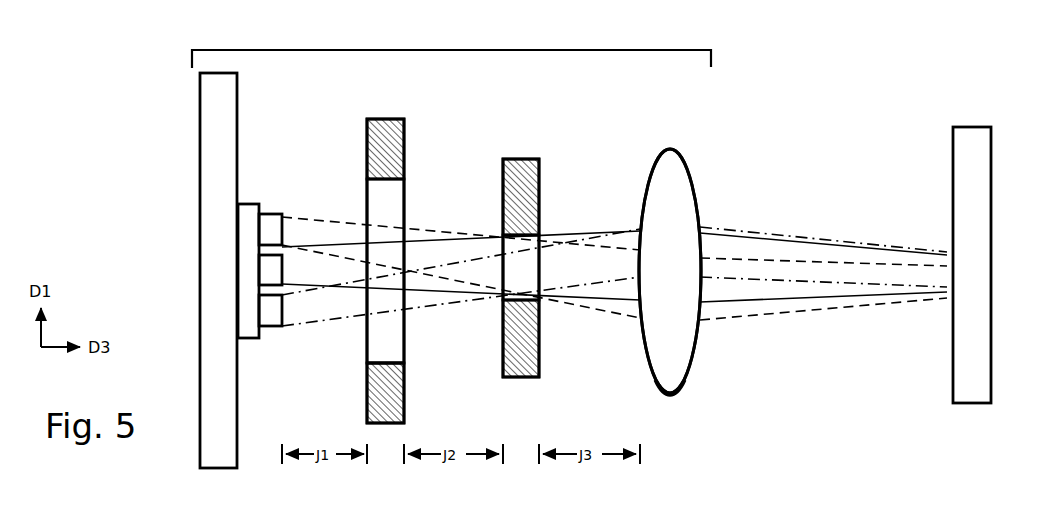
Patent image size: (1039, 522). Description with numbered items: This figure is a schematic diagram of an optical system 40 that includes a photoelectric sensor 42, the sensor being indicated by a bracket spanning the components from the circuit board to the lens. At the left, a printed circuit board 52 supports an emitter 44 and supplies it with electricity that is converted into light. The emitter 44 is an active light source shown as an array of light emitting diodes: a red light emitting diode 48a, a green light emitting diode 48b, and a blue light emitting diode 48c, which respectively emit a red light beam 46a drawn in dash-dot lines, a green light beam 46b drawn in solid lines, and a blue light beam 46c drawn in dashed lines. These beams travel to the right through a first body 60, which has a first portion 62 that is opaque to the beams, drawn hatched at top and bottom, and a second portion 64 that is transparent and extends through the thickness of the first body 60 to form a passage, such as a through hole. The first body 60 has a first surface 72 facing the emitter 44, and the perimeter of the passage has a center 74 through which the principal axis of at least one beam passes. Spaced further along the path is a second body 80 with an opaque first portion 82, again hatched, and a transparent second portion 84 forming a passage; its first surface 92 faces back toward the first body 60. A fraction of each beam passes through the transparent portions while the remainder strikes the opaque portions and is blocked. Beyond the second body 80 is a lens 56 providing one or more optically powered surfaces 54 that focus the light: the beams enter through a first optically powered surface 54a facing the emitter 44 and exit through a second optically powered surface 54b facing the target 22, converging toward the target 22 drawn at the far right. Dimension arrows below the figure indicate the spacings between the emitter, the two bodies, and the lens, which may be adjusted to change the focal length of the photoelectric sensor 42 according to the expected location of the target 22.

The target 22 is at (993, 255).
The optical system 40 is at (784, 98).
The photoelectric sensor 42 is at (508, 50).
The emitter 44 is at (271, 241).
The red light beam 46a is at (614, 292).
The green light beam 46b is at (614, 281).
The blue light beam 46c is at (614, 257).
The red light emitting diode 48a is at (298, 338).
The green light emitting diode 48b is at (207, 244).
The blue light emitting diode 48c is at (294, 207).
The printed circuit board 52 is at (189, 270).
The optically powered surface 54 is at (645, 271).
The first optically powered surface 54a is at (625, 271).
The second optically powered surface 54b is at (717, 271).
The lens 56 is at (641, 393).
The first body 60 is at (360, 253).
The first portion of first body 62 is at (358, 148).
The second portion of first body 64 is at (410, 279).
The first surface of first body 72 is at (359, 394).
The center 74 is at (409, 392).
The second body 80 is at (497, 250).
The first portion of second body 82 is at (493, 195).
The second portion of second body 84 is at (546, 267).
The first surface of second body 92 is at (498, 338).